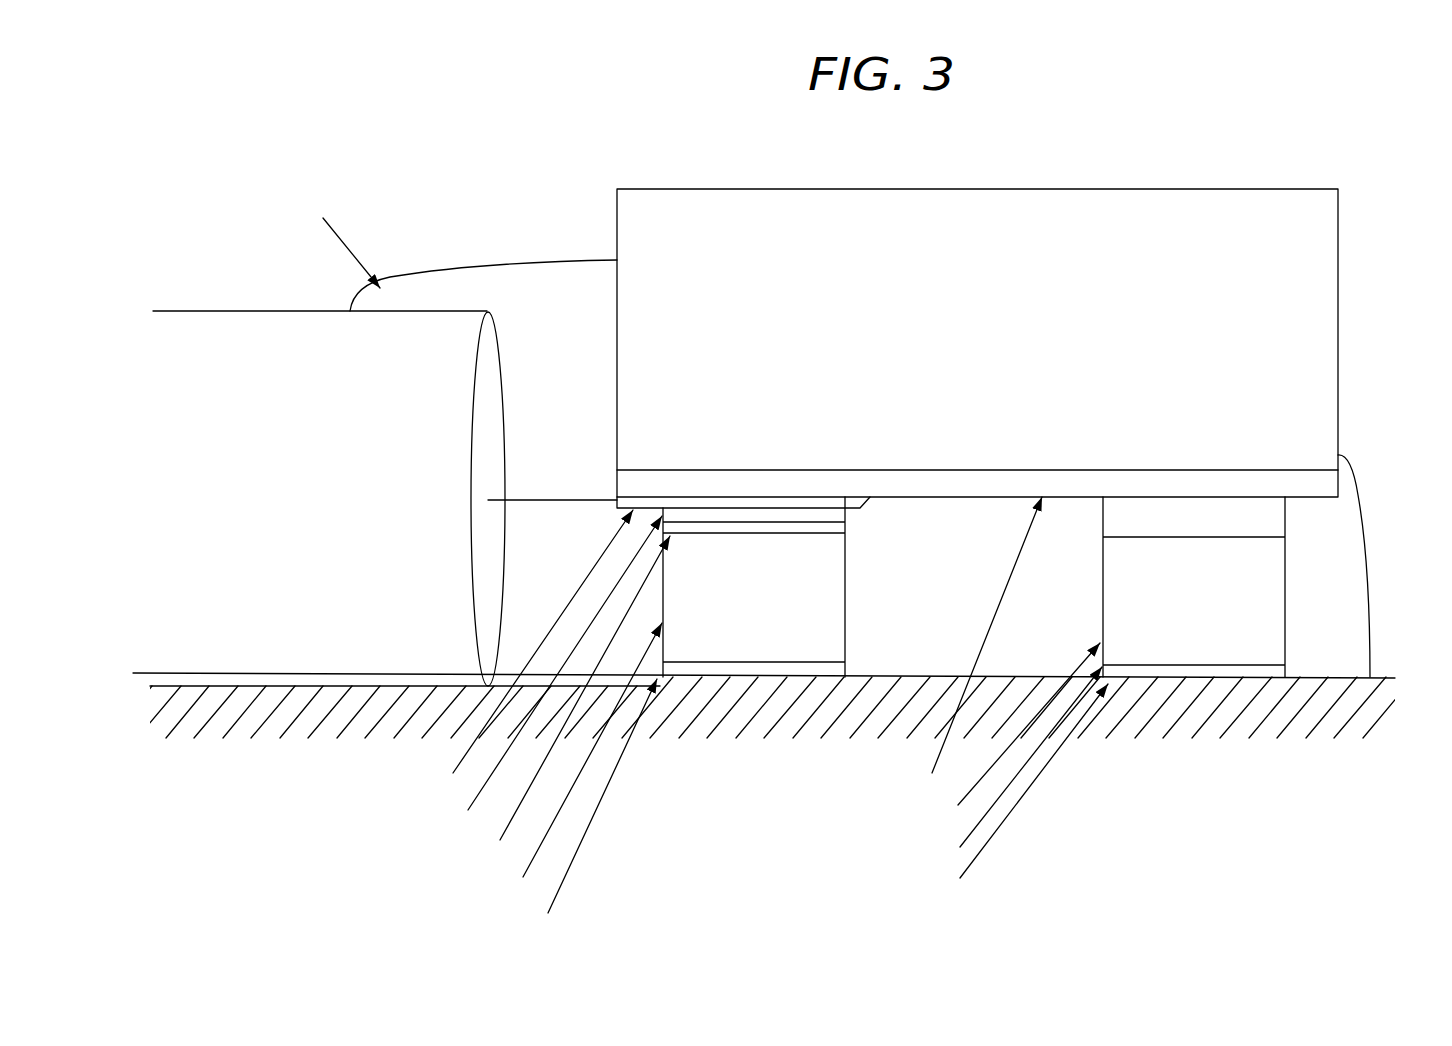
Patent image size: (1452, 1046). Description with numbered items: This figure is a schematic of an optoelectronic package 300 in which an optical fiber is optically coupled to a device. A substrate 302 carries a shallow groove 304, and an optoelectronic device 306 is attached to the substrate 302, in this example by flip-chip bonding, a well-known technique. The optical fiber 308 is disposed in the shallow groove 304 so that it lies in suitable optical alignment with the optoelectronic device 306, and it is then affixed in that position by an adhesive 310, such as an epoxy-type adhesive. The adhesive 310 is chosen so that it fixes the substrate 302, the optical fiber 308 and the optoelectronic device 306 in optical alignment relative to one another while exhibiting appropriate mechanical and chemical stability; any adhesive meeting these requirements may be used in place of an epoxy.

The optoelectronic package 300 is at (920, 141).
The substrate 302 is at (253, 730).
The shallow groove 304 is at (613, 688).
The optoelectronic device 306 is at (1338, 372).
The optical fiber 308 is at (219, 331).
The adhesive 310 is at (521, 278).